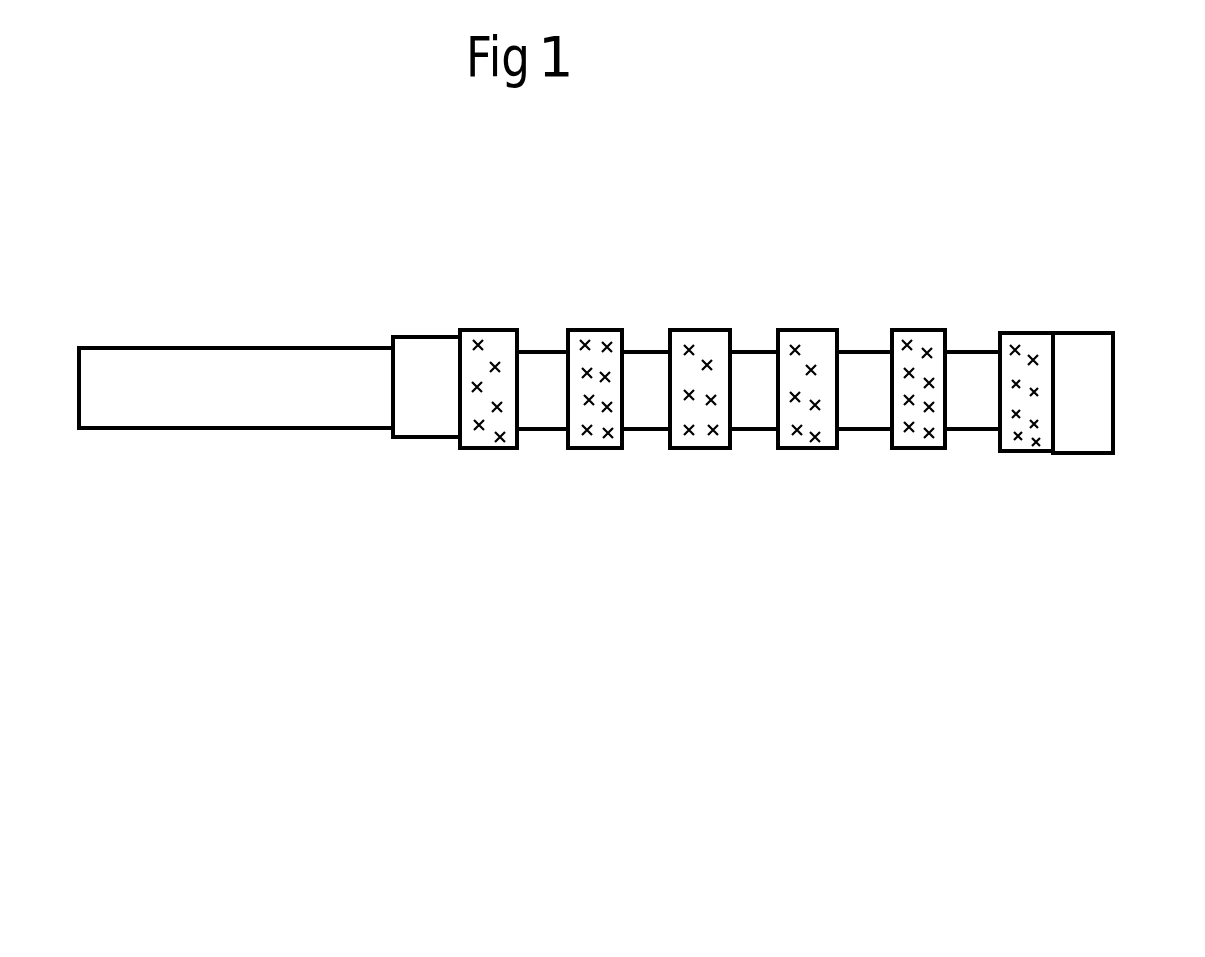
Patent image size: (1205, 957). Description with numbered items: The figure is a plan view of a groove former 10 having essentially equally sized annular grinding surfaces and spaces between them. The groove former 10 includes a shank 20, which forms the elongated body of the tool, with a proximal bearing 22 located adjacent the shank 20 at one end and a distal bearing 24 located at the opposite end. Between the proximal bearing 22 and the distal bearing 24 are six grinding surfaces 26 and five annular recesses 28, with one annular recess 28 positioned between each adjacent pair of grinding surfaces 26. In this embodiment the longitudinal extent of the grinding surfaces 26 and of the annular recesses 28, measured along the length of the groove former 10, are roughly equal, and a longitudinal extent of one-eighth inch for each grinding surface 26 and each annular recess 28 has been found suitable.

The groove former 10 is at (813, 232).
The shank 20 is at (254, 432).
The proximal bearing 22 is at (414, 443).
The distal bearing 24 is at (1083, 460).
The grinding surface 26 is at (494, 458).
The annular recess 28 is at (540, 350).